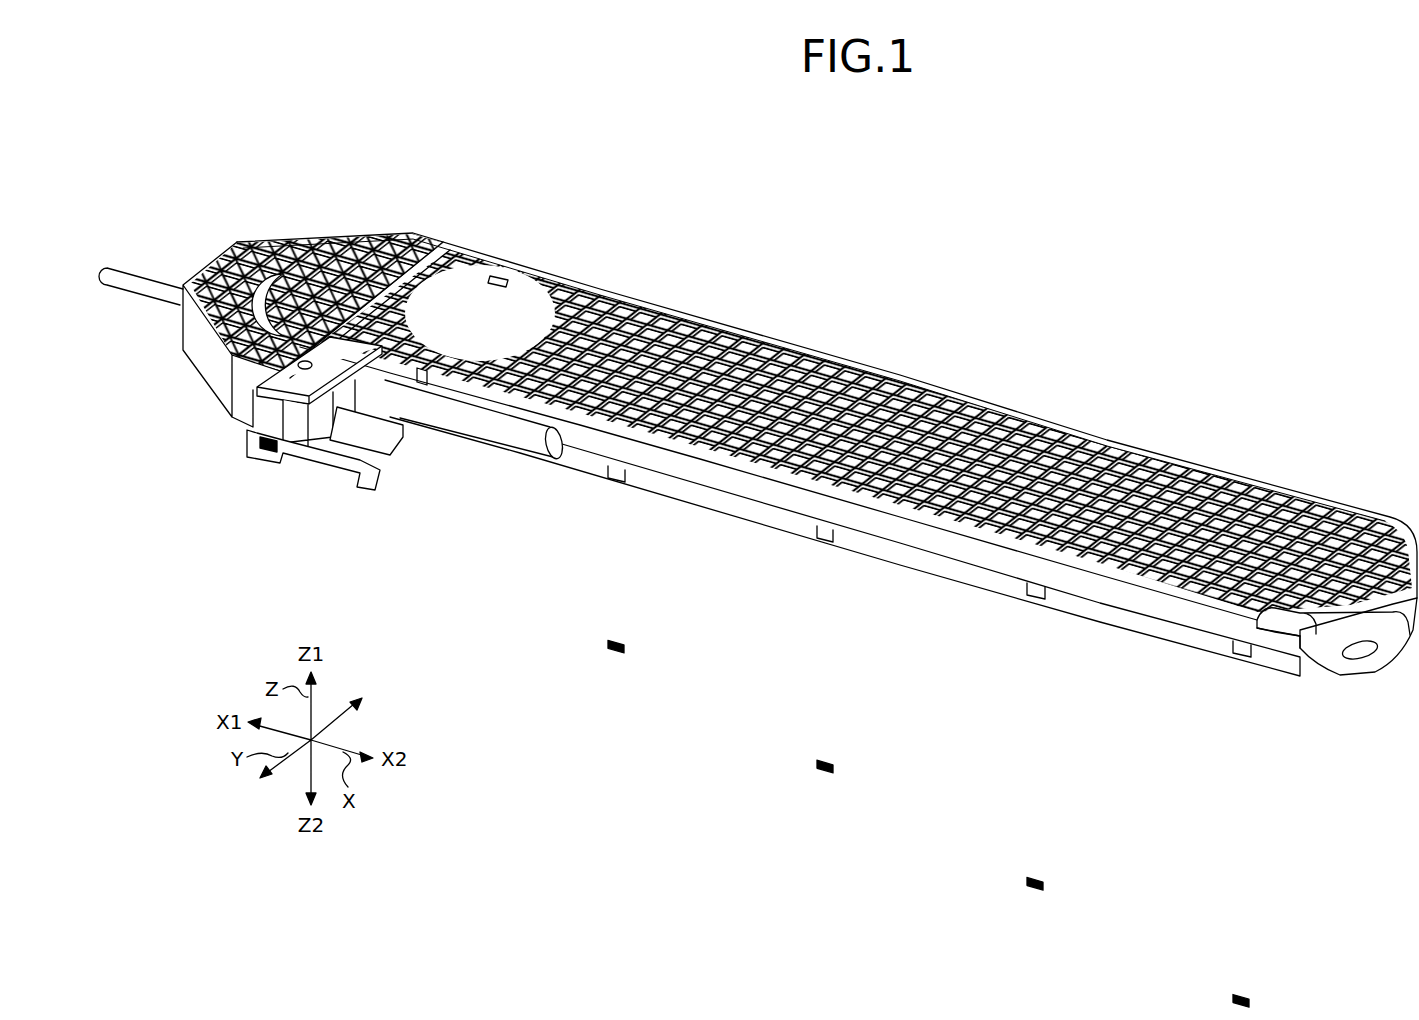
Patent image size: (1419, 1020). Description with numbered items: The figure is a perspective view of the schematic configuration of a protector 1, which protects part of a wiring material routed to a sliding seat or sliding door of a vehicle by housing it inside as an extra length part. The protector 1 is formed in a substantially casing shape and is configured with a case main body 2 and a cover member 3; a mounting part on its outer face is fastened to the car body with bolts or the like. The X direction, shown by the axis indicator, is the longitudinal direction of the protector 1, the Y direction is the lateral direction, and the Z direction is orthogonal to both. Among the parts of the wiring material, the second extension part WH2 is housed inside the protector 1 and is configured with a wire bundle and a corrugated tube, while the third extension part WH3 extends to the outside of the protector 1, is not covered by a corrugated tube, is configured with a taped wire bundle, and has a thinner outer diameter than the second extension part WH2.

The protector 1 is at (758, 585).
The case main body 2 is at (800, 454).
The cover member 3 is at (1046, 618).
The second extension part WH2 is at (465, 437).
The third extension part WH3 is at (133, 271).